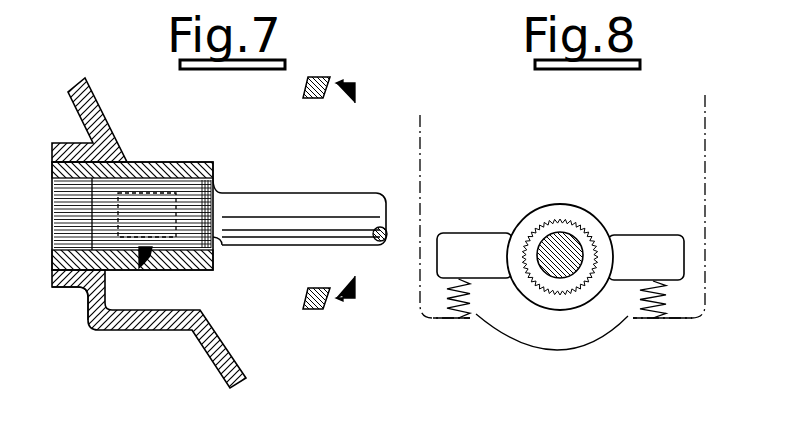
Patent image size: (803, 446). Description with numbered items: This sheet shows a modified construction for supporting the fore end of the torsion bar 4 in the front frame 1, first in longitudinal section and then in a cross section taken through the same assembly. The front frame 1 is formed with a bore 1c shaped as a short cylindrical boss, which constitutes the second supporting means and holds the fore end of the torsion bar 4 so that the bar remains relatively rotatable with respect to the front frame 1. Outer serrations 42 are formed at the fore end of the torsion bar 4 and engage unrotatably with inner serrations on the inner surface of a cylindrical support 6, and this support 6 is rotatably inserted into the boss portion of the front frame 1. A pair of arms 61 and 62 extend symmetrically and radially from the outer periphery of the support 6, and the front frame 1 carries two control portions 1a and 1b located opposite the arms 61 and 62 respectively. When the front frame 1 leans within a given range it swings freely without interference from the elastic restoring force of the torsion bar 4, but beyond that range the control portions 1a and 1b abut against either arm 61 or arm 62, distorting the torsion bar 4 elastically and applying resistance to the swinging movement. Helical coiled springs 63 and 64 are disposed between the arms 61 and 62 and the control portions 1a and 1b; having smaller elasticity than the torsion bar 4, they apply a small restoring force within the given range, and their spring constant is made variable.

In FIG. 7, the front frame 1 is at (98, 115).
In FIG. 8, the front frame 1 is at (420, 133).
In FIG. 7, the control portion 1a is at (168, 279).
In FIG. 8, the control portion 1a is at (440, 318).
In FIG. 8, the control portion 1b is at (657, 318).
In FIG. 7, the bore 1c is at (67, 290).
In FIG. 7, the torsion bar 4 is at (285, 202).
In FIG. 8, the torsion bar 4 is at (574, 240).
In FIG. 7, the cylindrical support 6 is at (143, 163).
In FIG. 8, the cylindrical support 6 is at (528, 218).
In FIG. 7, the outer serrations 42 is at (216, 184).
In FIG. 8, the outer serrations 42 is at (562, 222).
In FIG. 7, the arm 61 is at (178, 163).
In FIG. 8, the arm 61 is at (470, 242).
In FIG. 8, the arm 62 is at (656, 247).
In FIG. 7, the helical coiled spring 63 is at (142, 268).
In FIG. 8, the helical coiled spring 63 is at (468, 313).
In FIG. 8, the helical coiled spring 64 is at (640, 313).